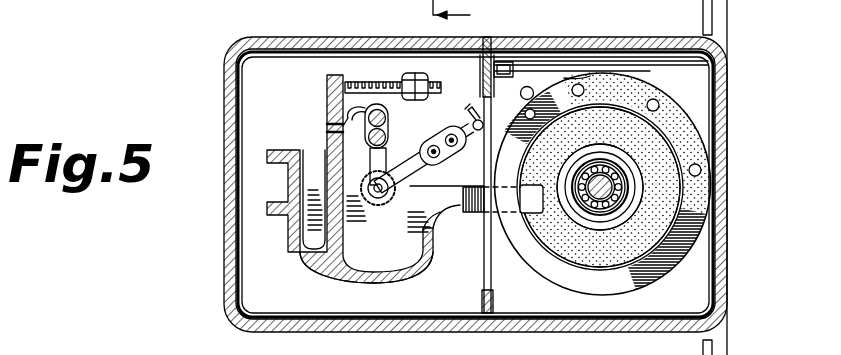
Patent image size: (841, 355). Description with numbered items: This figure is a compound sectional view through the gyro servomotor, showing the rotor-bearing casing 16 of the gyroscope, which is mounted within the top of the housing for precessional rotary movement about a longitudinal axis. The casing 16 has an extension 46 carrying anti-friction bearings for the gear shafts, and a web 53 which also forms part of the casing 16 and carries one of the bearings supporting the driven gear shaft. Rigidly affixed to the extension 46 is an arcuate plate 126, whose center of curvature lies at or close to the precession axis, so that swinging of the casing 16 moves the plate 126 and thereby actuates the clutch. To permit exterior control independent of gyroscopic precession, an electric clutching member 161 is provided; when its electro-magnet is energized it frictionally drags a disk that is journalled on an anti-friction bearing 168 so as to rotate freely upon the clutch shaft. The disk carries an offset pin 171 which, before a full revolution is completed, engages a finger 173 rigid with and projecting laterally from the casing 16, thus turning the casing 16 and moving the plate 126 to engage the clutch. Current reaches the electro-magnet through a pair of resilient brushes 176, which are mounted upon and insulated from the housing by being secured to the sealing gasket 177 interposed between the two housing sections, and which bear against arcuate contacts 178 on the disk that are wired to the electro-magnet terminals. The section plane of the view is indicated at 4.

The section line 4- 4 is at (451, 18).
The rotor-bearing casing 16 is at (287, 250).
The extension of the rotor-bearing casing 46 is at (336, 260).
The web 53 is at (345, 230).
The arcuate plate 126 is at (410, 274).
The electric clutching member 161 is at (650, 78).
The anti-friction bearing 168 is at (582, 208).
The pin 171 is at (520, 113).
The finger 173 is at (458, 205).
The resilient brushes 176 is at (555, 72).
The sealing gasket 177 is at (489, 38).
The arcuate contacts 178 is at (713, 142).